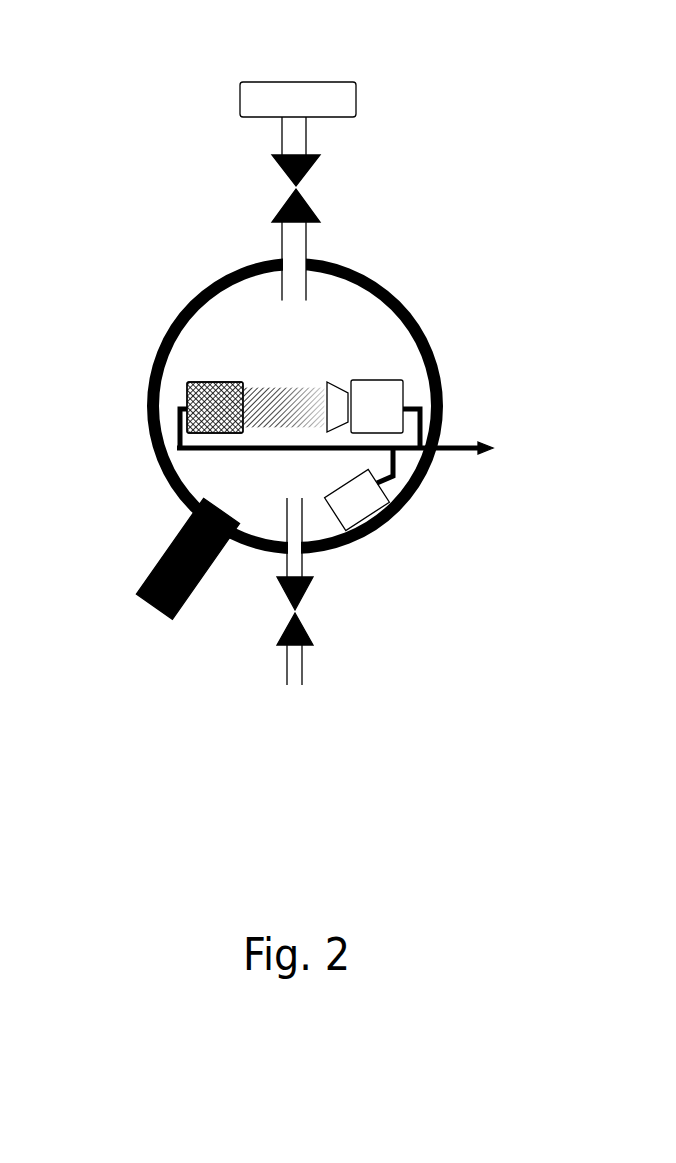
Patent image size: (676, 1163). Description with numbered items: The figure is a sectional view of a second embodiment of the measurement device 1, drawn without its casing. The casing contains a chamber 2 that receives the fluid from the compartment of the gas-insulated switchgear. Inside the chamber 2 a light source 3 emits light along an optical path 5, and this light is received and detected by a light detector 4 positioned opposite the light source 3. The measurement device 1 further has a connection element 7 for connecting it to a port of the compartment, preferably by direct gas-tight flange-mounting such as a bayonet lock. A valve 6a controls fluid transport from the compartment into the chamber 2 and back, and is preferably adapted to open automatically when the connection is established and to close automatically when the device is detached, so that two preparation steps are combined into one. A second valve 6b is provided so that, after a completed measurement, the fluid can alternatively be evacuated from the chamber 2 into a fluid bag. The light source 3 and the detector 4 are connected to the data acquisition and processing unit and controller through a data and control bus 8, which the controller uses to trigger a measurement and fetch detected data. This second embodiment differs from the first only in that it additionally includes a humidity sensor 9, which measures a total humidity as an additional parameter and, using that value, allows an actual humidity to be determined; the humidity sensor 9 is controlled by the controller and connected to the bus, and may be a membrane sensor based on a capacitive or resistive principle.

The measurement device 1 is at (45, 62).
The chamber 2 is at (368, 302).
The light source 3 is at (151, 456).
The light detector 4 is at (393, 390).
The optical path 5 is at (287, 393).
The valve 6a is at (280, 168).
The second valve 6b is at (283, 597).
The connection element 7 is at (342, 100).
The data and control bus 8 is at (477, 445).
The humidity sensor 9 is at (362, 502).